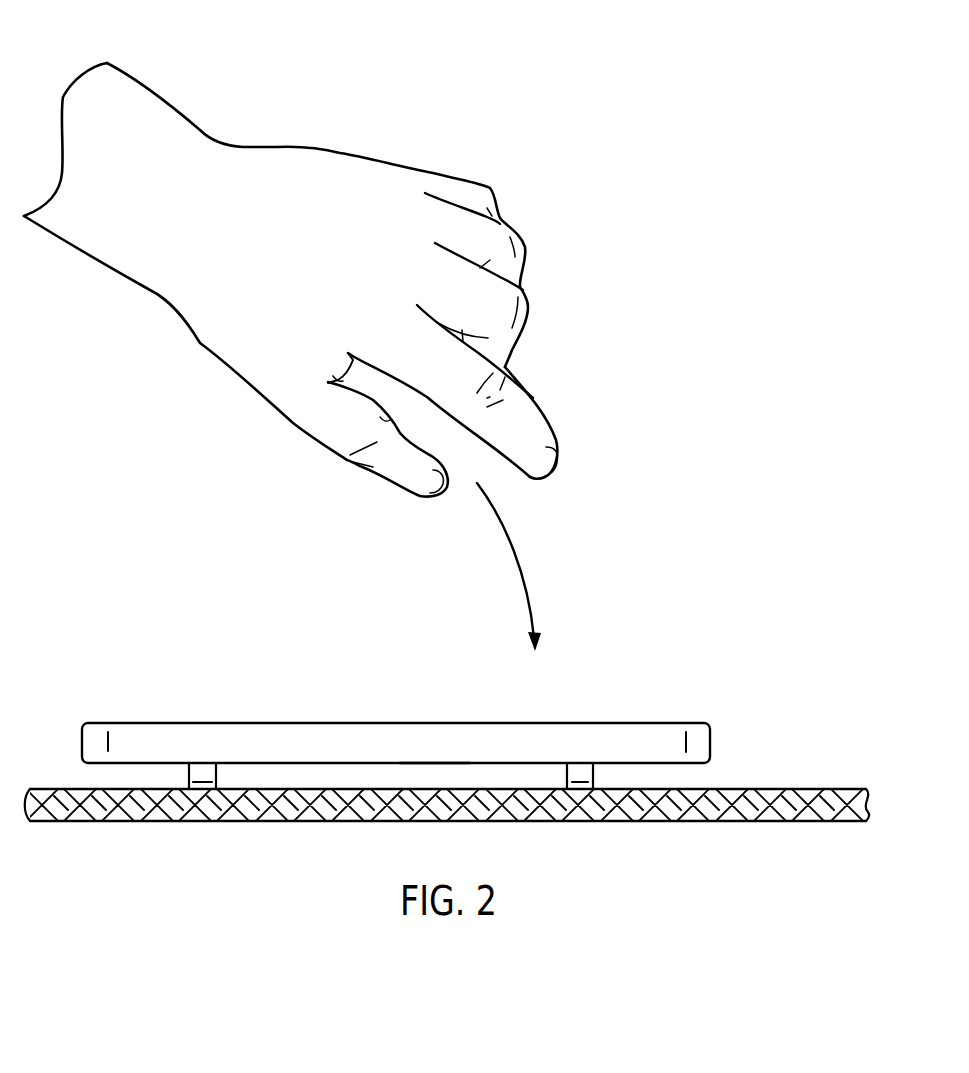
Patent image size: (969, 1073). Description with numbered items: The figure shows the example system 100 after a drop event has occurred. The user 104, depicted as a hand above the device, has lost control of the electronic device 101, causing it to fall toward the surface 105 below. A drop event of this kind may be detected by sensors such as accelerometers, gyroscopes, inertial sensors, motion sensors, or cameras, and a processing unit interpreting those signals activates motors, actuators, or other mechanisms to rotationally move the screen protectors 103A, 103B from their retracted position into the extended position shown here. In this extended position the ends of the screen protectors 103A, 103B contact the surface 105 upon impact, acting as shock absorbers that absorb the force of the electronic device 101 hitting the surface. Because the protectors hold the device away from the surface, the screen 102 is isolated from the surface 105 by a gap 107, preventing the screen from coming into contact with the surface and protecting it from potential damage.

The system 100 is at (707, 75).
The electronic device 101 is at (643, 731).
The screen 102 is at (423, 760).
The screen protector 103A is at (582, 788).
The screen protector 103B is at (203, 786).
The user 104 is at (163, 283).
The surface 105 is at (767, 798).
The gap 107 is at (380, 771).